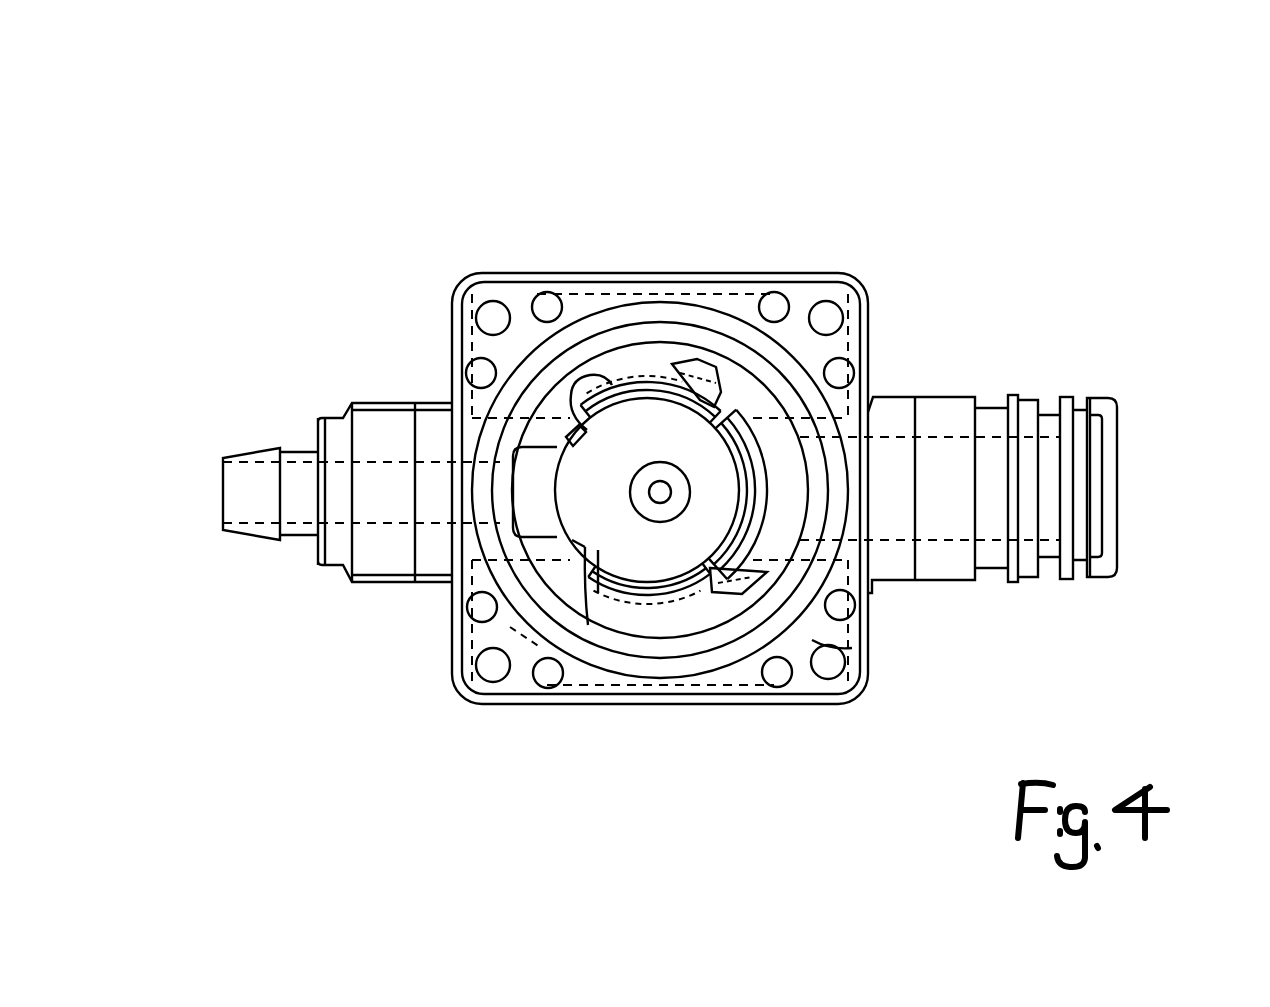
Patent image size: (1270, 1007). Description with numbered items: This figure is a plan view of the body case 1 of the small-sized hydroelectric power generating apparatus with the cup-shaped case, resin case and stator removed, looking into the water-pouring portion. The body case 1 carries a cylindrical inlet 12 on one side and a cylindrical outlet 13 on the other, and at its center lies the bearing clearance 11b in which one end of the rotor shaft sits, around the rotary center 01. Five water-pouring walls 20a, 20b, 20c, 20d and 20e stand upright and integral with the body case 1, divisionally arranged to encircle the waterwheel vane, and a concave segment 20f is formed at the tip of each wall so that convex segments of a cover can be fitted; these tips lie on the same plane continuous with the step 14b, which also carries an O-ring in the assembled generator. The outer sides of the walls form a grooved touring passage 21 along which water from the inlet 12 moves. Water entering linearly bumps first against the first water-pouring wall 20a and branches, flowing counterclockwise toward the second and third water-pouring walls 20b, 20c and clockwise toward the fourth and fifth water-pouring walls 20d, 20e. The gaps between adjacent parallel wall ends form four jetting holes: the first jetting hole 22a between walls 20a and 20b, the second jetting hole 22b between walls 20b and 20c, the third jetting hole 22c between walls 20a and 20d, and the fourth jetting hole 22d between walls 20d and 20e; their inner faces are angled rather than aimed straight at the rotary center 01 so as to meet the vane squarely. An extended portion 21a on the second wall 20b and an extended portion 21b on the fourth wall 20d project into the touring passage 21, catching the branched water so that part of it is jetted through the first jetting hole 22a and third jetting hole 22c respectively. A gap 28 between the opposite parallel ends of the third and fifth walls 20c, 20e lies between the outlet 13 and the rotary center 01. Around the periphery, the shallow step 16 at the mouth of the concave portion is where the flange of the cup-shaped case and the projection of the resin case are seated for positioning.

The body case 1 is at (803, 293).
The inlet 12 is at (1125, 470).
The outlet 13 is at (243, 453).
The step 16 is at (852, 648).
The gap 28 is at (527, 493).
The first water-pouring wall 20a is at (770, 447).
The second water-pouring wall 20b is at (640, 378).
The third water-pouring wall 20c is at (555, 398).
The fourth water-pouring wall 20d is at (693, 610).
The fifth water-pouring wall 20e is at (580, 563).
The concave segment 20f is at (670, 385).
The touring passage 21 is at (650, 620).
The extended portion 21a is at (718, 368).
The extended portion 21b is at (745, 600).
The first jetting hole 22a is at (733, 417).
The second jetting hole 22b is at (573, 380).
The third jetting hole 22c is at (800, 603).
The fourth jetting hole 22d is at (600, 600).
The step 14b is at (706, 645).
The bearing clearance 11b is at (660, 492).
The rotary center 01 is at (660, 492).